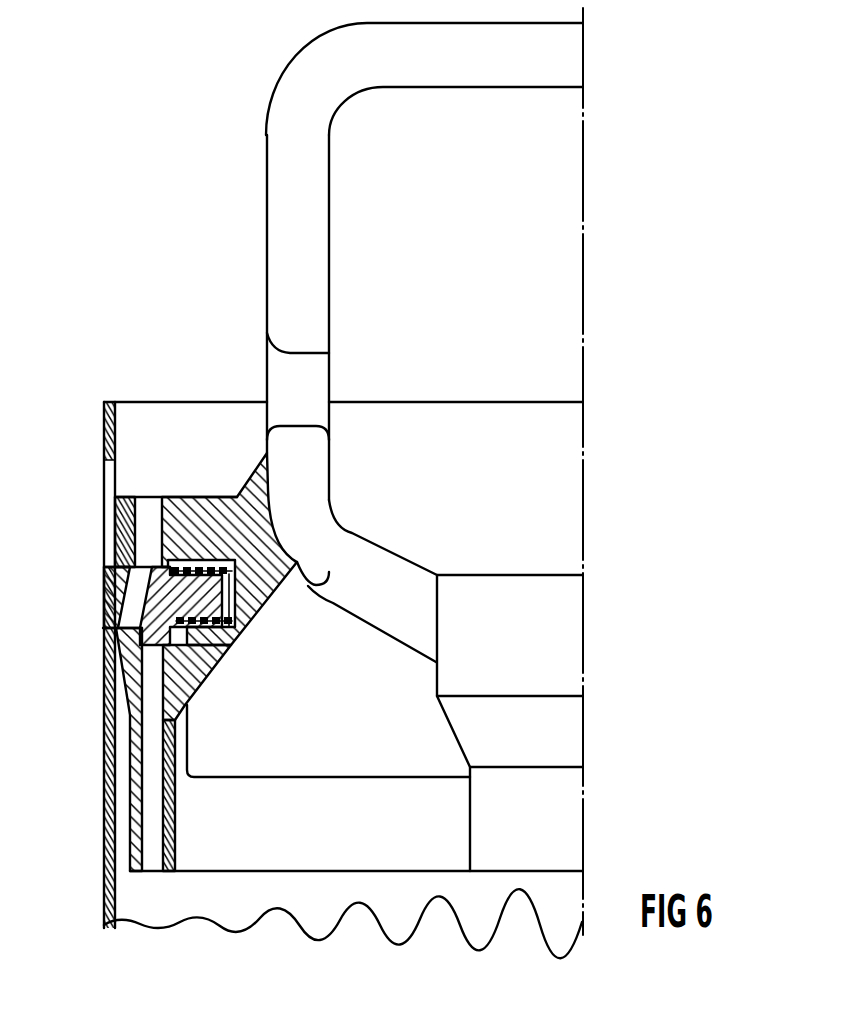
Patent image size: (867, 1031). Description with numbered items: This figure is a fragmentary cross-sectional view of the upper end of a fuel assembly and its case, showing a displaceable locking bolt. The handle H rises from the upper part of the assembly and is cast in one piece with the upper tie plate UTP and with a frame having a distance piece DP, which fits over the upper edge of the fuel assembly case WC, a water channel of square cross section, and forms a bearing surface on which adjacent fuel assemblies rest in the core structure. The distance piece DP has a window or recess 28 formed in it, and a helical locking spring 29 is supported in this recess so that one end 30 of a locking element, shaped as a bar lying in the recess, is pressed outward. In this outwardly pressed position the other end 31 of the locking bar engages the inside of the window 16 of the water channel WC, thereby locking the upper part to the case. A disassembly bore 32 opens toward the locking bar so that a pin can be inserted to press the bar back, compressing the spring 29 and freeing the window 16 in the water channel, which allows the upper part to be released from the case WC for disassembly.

The handle H is at (277, 222).
The distance piece DP is at (205, 516).
The window 16 is at (110, 471).
The disassembly bore 32 is at (143, 526).
The end of the locking bar 31 is at (104, 592).
The end of the locking element 30 is at (258, 614).
The recess 28 is at (236, 642).
The helical locking spring 29 is at (240, 660).
The fuel assembly case WC is at (110, 826).
The upper tie plate UTP is at (330, 850).